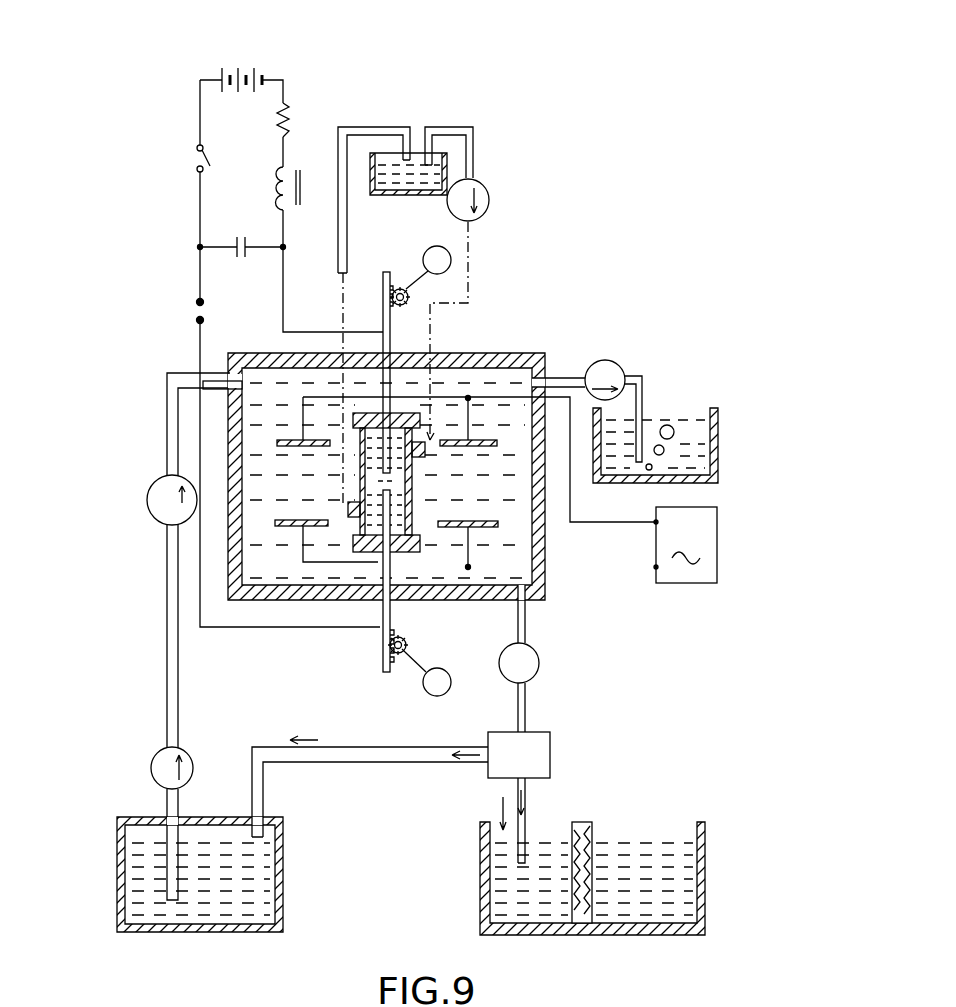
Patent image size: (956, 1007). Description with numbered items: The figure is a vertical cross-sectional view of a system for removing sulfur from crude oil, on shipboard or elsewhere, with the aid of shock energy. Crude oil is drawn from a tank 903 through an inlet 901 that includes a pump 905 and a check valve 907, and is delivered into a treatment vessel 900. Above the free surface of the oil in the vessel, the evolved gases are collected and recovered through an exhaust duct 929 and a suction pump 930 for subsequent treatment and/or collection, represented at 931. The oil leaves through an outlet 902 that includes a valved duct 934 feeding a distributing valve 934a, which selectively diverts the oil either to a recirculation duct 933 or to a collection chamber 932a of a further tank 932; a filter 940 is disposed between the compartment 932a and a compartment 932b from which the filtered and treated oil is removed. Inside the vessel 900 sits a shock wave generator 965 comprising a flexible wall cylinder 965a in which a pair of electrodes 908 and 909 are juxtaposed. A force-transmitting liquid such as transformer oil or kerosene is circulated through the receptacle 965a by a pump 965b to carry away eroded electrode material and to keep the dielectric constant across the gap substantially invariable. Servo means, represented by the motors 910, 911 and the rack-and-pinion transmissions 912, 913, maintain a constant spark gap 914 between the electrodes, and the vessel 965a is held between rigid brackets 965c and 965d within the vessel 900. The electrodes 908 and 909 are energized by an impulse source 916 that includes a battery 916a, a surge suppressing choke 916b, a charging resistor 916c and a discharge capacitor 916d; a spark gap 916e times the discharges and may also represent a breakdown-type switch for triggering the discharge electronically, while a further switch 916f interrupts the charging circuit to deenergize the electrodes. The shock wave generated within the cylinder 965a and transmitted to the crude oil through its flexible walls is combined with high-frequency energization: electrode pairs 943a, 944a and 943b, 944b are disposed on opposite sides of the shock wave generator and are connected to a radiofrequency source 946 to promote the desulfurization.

The treatment vessel 900 is at (535, 360).
The inlet 901 is at (166, 378).
The outlet 902 is at (530, 632).
The tank 903 is at (120, 908).
The pump 905 is at (192, 757).
The check valve 907 is at (168, 525).
The electrode 908 is at (392, 347).
The electrode 909 is at (392, 628).
The motor 910 is at (430, 250).
The motor 911 is at (438, 697).
The rack-and-pinion transmission 912 is at (398, 287).
The rack-and-pinion transmission 913 is at (409, 647).
The spark gap 914 is at (382, 481).
The impulse source 916 is at (292, 135).
The battery 916a is at (240, 64).
The surge suppressing choke 916b is at (301, 205).
The charging resistor 916c is at (281, 121).
The discharge capacitor 916d is at (238, 237).
The spark gap 916e is at (197, 301).
The switch 916f is at (198, 146).
The exhaust duct 929 is at (556, 377).
The suction pump 930 is at (627, 370).
The gas treatment and/or collection 931 is at (693, 445).
The further tank 932 is at (589, 873).
The collection chamber 932a is at (484, 918).
The compartment 932b is at (700, 860).
The recirculation duct 933 is at (404, 764).
The valved duct 934 is at (540, 665).
The distributing valve 934a is at (552, 745).
The filter 940 is at (590, 822).
The electrode 943a is at (283, 448).
The electrode 943b is at (478, 438).
The electrode 944a is at (292, 528).
The electrode 944b is at (480, 529).
The radiofrequency source 946 is at (718, 527).
The shock wave generator 965 is at (391, 500).
The flexible wall cylinder 965a is at (412, 512).
The pump 965b is at (490, 190).
The rigid bracket 965c is at (366, 553).
The rigid bracket 965d is at (355, 414).